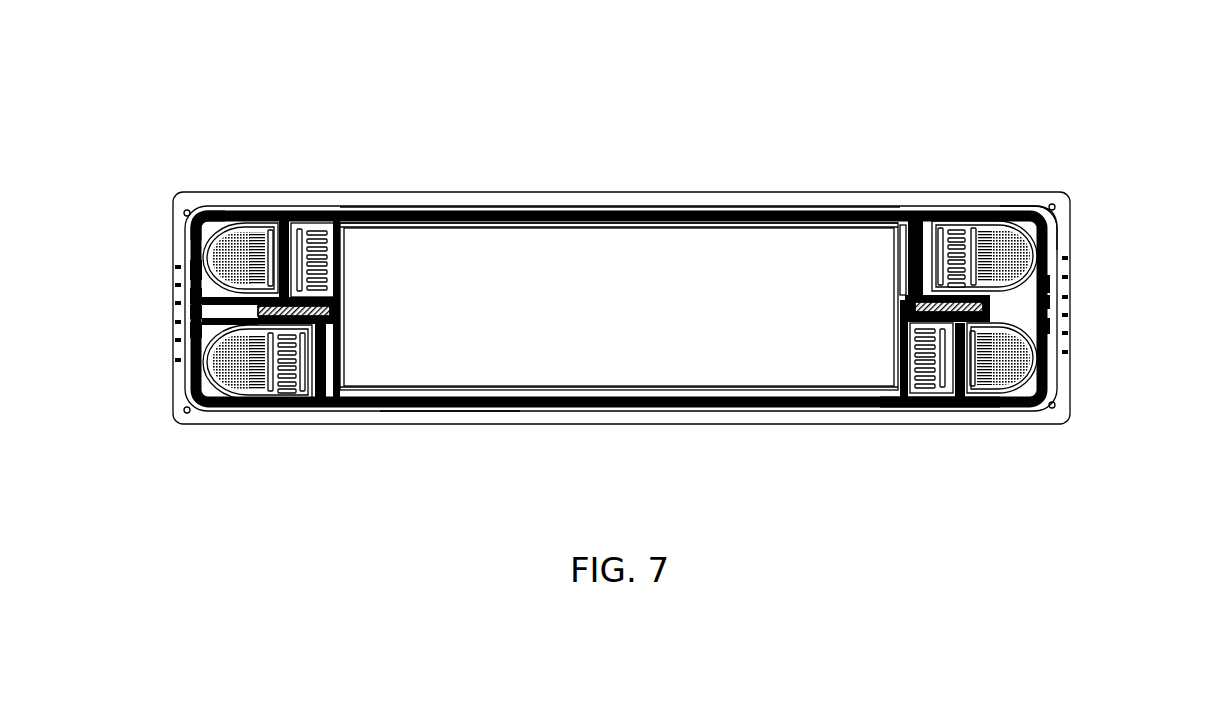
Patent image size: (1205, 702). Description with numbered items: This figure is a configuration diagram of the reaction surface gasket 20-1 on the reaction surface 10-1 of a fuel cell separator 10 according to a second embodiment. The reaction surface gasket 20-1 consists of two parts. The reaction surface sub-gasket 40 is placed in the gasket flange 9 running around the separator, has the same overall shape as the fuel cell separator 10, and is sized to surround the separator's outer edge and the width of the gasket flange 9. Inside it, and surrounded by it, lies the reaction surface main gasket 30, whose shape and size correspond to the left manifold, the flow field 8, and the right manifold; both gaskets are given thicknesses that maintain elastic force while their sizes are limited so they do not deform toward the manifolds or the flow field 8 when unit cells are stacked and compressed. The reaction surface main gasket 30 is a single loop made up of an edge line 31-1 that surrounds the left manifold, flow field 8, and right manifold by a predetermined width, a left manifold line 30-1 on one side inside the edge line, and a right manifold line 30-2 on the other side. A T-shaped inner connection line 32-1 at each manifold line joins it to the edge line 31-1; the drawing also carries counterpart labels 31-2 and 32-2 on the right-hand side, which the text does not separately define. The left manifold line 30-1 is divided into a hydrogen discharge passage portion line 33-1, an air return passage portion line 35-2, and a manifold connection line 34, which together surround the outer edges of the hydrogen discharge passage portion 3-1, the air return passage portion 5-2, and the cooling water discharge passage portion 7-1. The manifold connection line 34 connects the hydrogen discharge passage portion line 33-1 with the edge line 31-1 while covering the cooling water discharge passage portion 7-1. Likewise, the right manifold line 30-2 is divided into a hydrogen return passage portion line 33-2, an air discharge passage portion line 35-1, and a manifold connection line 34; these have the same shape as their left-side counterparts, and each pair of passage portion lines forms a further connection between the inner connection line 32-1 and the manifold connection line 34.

The fuel cell separator 10 is at (788, 158).
The reaction surface 10-1 is at (693, 210).
The gasket flange 9 is at (462, 202).
The reaction surface sub-gasket 40 is at (547, 205).
The reaction surface main gasket 30 is at (602, 212).
The reaction surface gasket 20-1 is at (602, 95).
The flow field 8 is at (613, 313).
The left manifold line 30-1 is at (213, 320).
The right manifold line 30-2 is at (1055, 181).
The hydrogen discharge passage portion 3-1 is at (210, 248).
The air return passage portion 5-2 is at (222, 380).
The manifold connection line 34 is at (258, 316).
The hydrogen discharge passage portion line 33-1 is at (200, 224).
The hydrogen return passage portion line 33-2 is at (920, 408).
The air discharge passage portion line 35-1 is at (1062, 207).
The air return passage portion line 35-2 is at (440, 411).
The edge line 31-1 is at (203, 273).
The second side band 31-2 is at (1047, 290).
The cooling water discharge passage portion 7-1 is at (203, 297).
The second side contact 32-2 is at (203, 312).
The inner connection line 32-1 is at (203, 330).